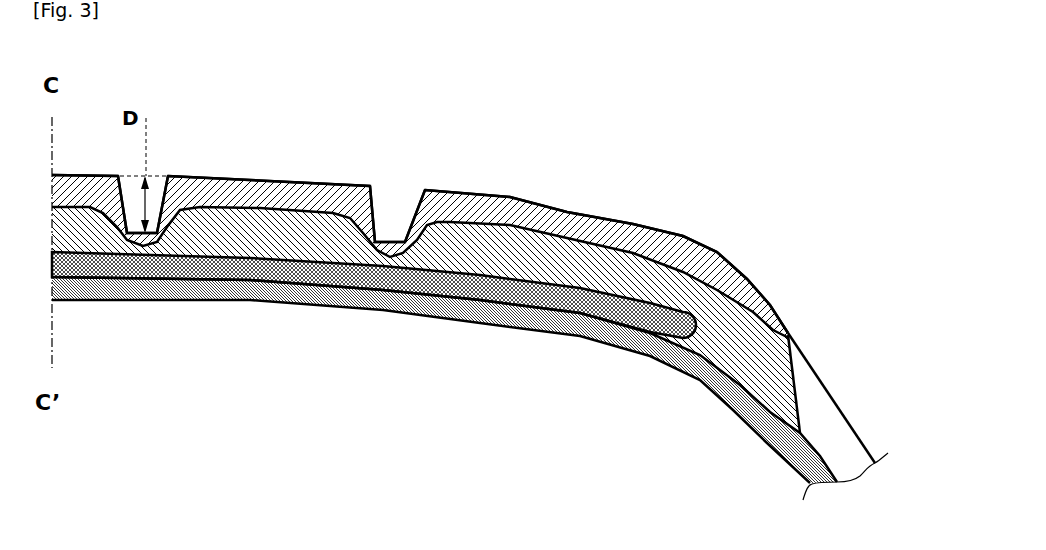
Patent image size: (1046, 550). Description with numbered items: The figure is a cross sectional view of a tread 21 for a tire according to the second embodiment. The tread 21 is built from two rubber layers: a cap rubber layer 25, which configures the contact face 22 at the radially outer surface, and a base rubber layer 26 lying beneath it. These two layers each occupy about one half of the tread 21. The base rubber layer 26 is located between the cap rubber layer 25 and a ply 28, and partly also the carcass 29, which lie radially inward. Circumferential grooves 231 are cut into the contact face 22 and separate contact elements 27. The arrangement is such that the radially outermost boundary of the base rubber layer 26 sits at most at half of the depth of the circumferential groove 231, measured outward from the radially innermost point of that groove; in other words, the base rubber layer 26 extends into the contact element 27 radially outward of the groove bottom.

The tread 21 is at (665, 146).
The contact face 22 is at (273, 176).
The cap rubber layer 25 is at (517, 218).
The base rubber layer 26 is at (580, 267).
The contact element 27 is at (60, 173).
The ply 28 is at (185, 263).
The carcass 29 is at (345, 293).
The circumferential groove 231 is at (157, 190).